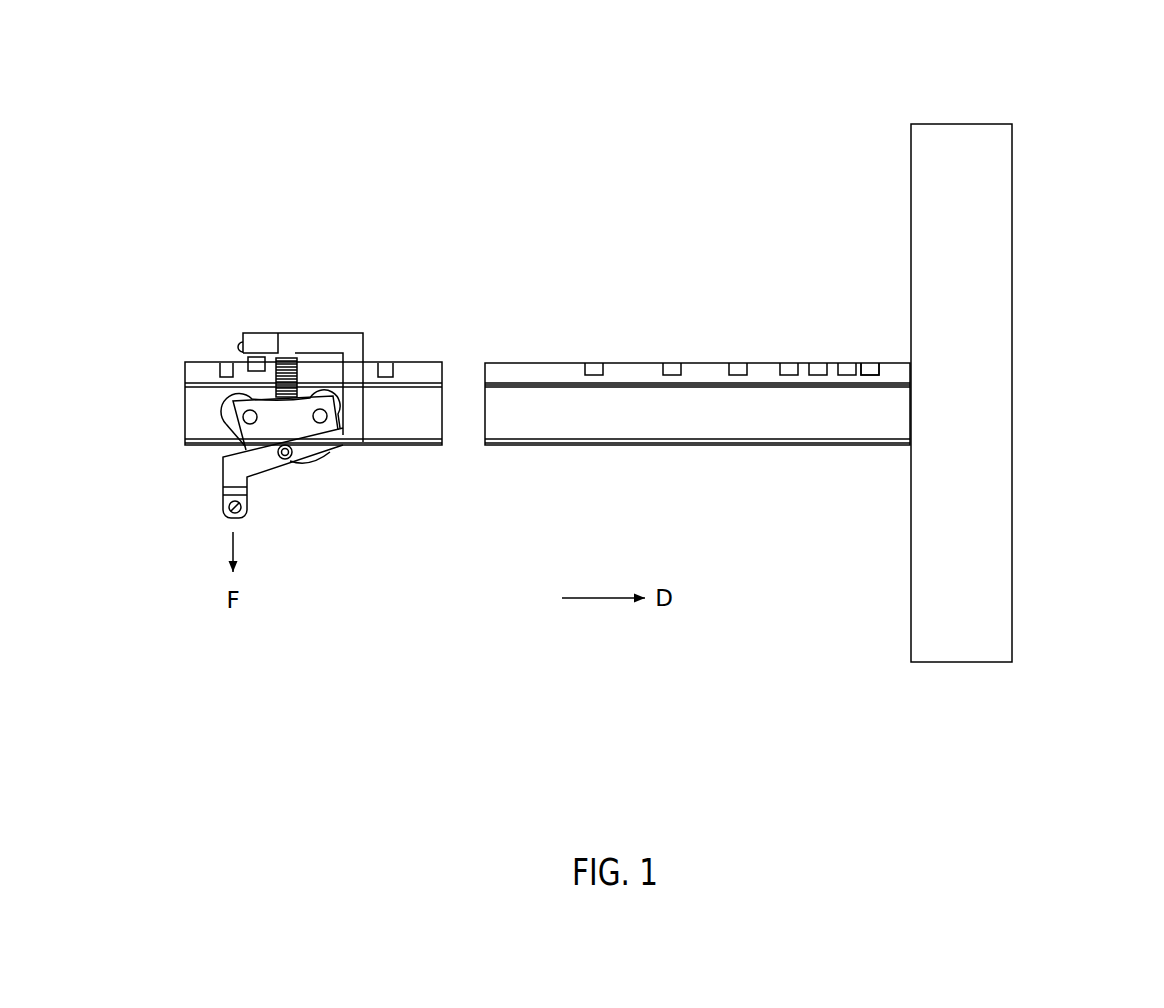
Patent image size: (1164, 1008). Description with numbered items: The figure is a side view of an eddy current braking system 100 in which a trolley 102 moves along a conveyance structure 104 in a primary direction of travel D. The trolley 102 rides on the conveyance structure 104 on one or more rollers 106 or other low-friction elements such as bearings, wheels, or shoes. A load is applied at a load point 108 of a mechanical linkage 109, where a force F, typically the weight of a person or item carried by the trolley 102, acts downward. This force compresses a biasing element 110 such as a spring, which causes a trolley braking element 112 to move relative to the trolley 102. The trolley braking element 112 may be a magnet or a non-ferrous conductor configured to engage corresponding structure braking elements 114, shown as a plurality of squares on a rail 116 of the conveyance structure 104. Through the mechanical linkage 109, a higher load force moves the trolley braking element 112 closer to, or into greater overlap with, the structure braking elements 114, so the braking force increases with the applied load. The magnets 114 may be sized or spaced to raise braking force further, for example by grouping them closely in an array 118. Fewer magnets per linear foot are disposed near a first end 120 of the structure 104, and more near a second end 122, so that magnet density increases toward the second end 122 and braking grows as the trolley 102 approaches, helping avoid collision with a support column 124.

The eddy current braking system 100 is at (875, 128).
The trolley 102 is at (176, 526).
The conveyance structure 104 is at (789, 467).
The roller 106 is at (230, 423).
The load point 108 is at (238, 510).
The mechanical linkage 109 is at (337, 440).
The biasing element 110 is at (297, 367).
The trolley braking element 112 is at (255, 363).
The structure braking elements 114 is at (390, 367).
The rail 116 is at (637, 400).
The array 118 is at (587, 358).
The first end 120 is at (146, 361).
The second end 122 is at (891, 348).
The support column 124 is at (980, 440).